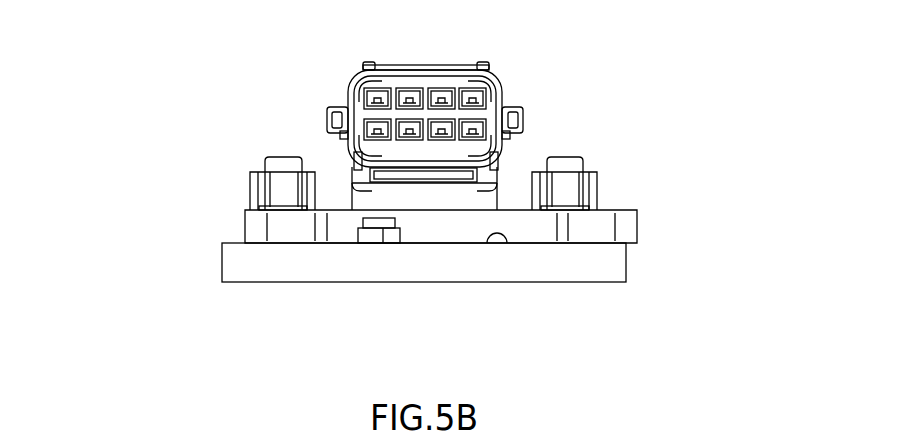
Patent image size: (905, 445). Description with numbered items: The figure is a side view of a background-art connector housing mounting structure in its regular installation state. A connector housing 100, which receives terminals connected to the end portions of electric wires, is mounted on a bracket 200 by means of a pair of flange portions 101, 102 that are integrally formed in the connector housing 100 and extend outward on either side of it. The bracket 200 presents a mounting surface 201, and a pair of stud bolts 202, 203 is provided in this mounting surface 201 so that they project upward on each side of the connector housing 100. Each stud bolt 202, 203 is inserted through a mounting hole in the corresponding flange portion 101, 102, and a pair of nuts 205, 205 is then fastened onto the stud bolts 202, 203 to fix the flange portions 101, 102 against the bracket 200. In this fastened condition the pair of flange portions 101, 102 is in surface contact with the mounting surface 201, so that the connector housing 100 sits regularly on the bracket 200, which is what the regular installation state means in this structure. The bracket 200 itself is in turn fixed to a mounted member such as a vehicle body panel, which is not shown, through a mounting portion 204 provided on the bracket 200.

The connector housing 100 is at (500, 69).
The flange portion 101 is at (245, 214).
The flange portion 102 is at (638, 216).
The bracket 200 is at (612, 292).
The mounting surface 201 is at (504, 245).
The stud bolt 202 is at (287, 157).
The stud bolt 203 is at (562, 157).
The mounting portion 204 is at (373, 235).
The nut 205 is at (255, 172).